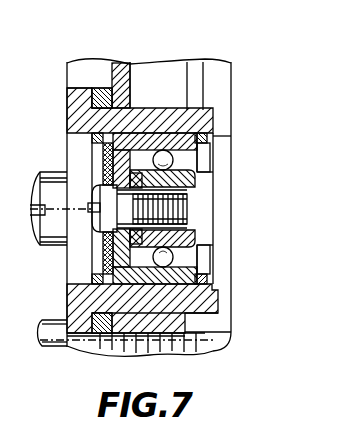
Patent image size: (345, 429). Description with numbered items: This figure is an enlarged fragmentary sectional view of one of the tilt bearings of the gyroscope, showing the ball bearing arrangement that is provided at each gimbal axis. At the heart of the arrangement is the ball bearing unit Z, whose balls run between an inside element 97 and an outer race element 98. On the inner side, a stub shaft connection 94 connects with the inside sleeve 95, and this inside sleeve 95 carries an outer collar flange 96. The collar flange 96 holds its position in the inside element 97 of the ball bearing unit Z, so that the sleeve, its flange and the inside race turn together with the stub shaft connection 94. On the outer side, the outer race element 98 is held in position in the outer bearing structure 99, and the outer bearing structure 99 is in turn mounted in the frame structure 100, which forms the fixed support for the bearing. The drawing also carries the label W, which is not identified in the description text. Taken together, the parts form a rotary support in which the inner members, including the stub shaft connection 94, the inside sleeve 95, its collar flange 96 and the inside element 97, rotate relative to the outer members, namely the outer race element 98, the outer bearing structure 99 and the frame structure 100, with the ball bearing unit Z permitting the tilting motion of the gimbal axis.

The frame structure 100 is at (118, 68).
The workpiece W is at (164, 76).
The outer race element 98 is at (141, 136).
The outer collar flange 96 is at (112, 162).
The ball bearing unit Z is at (172, 160).
The inside element 97 is at (197, 181).
The stub shaft connection 94 is at (207, 218).
The inside sleeve 95 is at (128, 232).
The outer bearing structure 99 is at (208, 298).